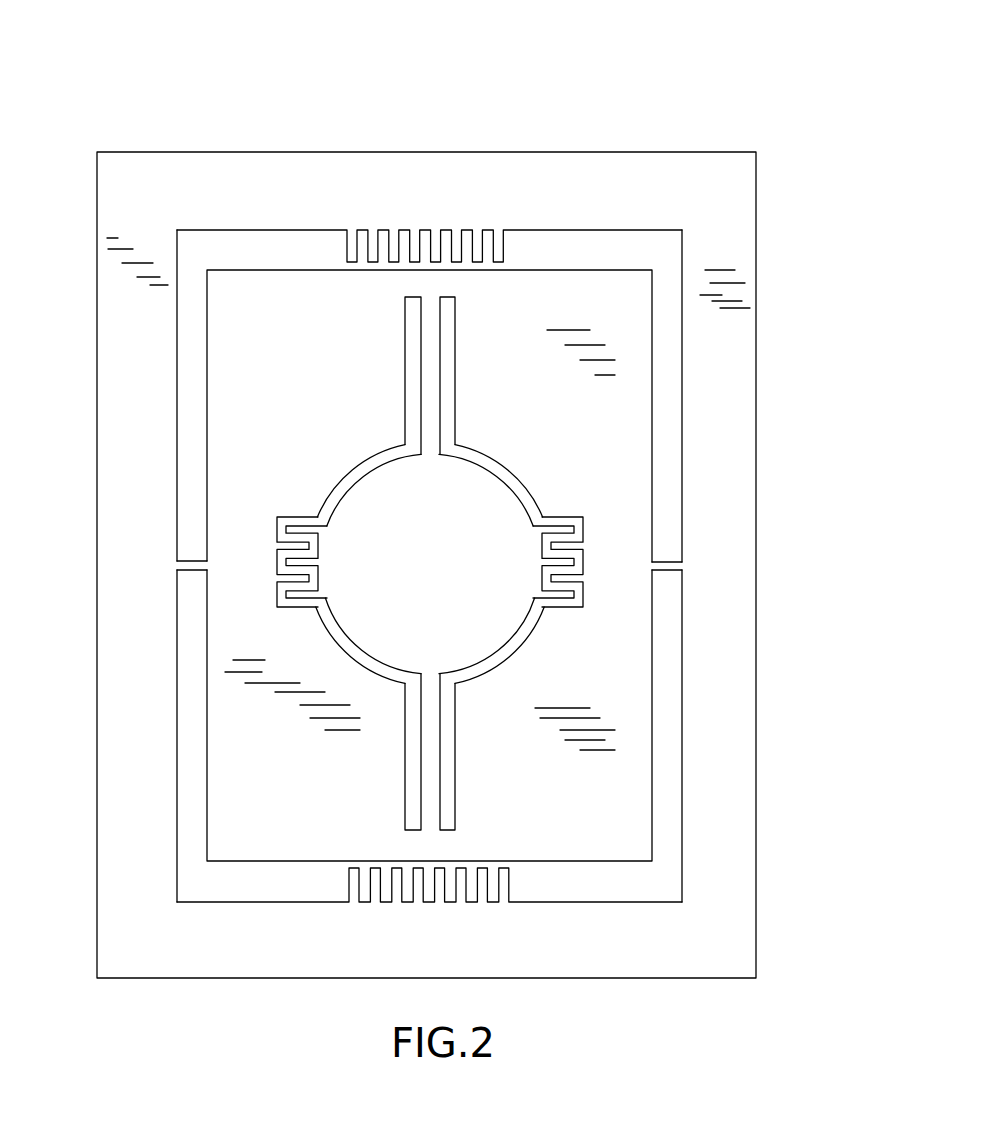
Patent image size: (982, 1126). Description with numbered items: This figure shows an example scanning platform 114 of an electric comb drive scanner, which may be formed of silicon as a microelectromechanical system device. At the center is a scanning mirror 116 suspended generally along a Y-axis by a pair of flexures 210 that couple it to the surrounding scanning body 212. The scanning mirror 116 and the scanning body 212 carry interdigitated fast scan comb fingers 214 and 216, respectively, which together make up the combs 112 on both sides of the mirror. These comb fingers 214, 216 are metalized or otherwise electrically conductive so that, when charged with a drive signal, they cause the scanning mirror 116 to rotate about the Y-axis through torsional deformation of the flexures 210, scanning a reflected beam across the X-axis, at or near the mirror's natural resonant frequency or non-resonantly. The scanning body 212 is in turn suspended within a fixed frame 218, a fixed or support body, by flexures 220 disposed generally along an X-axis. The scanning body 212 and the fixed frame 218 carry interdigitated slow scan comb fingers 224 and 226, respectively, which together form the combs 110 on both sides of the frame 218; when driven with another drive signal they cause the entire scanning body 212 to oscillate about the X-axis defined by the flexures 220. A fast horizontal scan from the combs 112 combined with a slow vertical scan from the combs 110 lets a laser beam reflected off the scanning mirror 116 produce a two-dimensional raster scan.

The scanning platform 114 is at (741, 79).
The combs 110 is at (430, 218).
The slow scan comb fingers 226 is at (429, 547).
The slow scan comb fingers 224 is at (498, 268).
The scanning body 212 is at (316, 369).
The flexures 210 is at (452, 356).
The combs 112 is at (455, 538).
The scanning mirror 116 is at (462, 526).
The flexures 220 is at (667, 564).
The fast scan comb fingers 216 is at (583, 592).
The fast scan comb fingers 214 is at (567, 600).
The fixed frame 218 is at (725, 632).